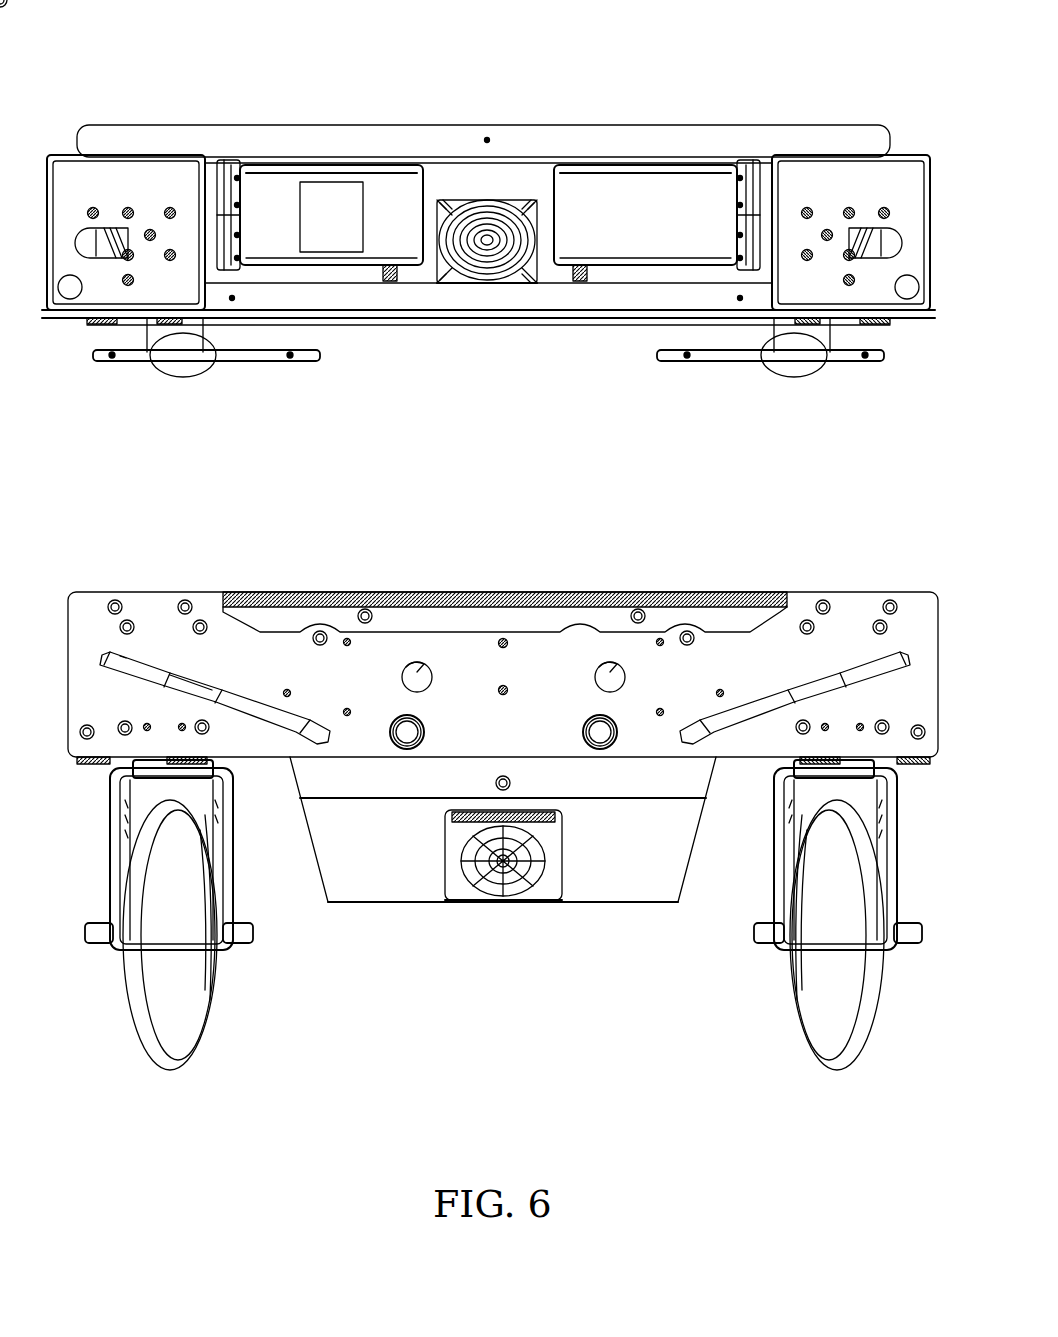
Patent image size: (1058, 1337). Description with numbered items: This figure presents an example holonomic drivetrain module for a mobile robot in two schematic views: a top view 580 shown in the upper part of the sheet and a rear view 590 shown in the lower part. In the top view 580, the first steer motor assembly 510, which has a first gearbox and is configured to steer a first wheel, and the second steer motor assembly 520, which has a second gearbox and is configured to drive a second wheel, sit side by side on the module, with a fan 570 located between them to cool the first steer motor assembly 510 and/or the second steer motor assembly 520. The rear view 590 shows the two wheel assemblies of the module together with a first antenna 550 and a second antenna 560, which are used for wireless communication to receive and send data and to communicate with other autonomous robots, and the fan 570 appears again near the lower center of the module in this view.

The first steer motor assembly 510 is at (383, 190).
The second steer motor assembly 520 is at (617, 197).
The first antenna 550 is at (315, 755).
The second antenna 560 is at (697, 755).
The fan 570 is at (497, 185).
The top view 580 is at (850, 65).
The rear view 590 is at (886, 560).